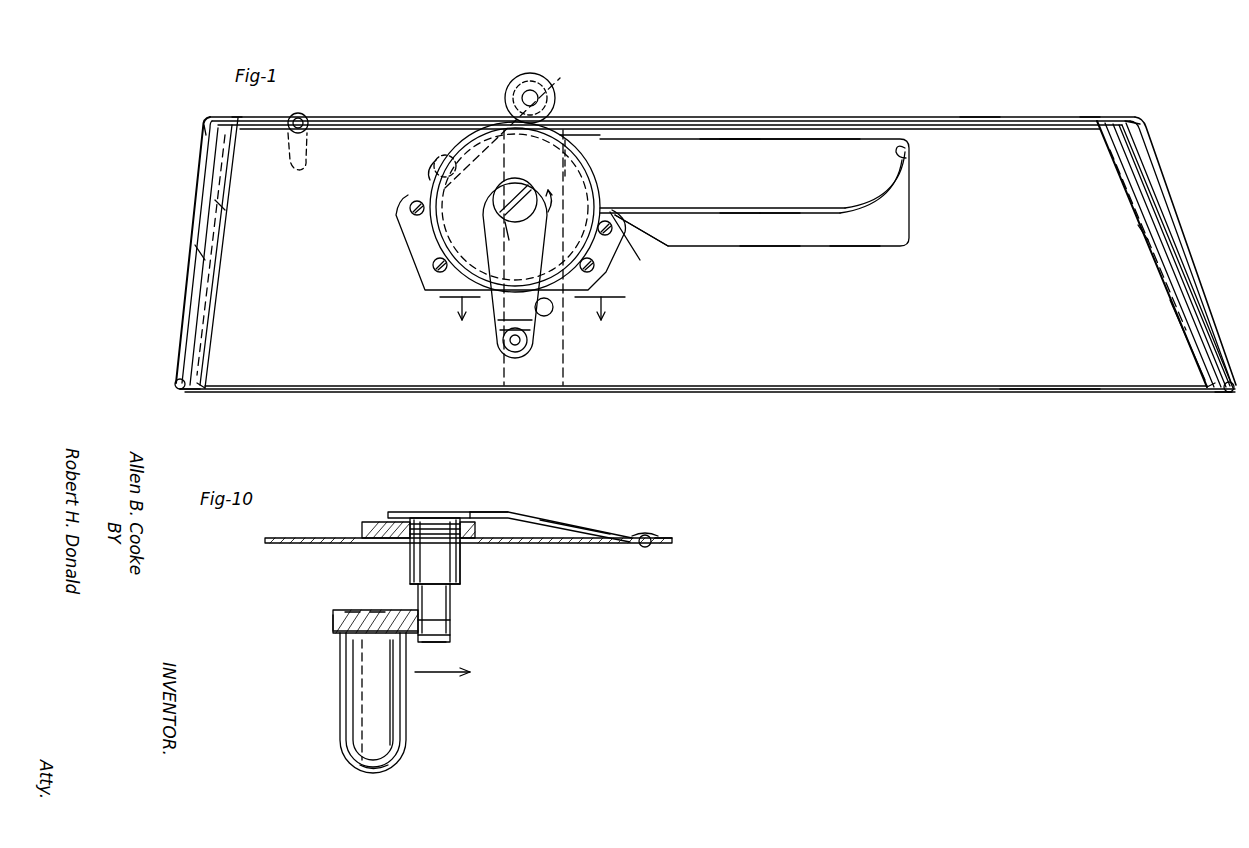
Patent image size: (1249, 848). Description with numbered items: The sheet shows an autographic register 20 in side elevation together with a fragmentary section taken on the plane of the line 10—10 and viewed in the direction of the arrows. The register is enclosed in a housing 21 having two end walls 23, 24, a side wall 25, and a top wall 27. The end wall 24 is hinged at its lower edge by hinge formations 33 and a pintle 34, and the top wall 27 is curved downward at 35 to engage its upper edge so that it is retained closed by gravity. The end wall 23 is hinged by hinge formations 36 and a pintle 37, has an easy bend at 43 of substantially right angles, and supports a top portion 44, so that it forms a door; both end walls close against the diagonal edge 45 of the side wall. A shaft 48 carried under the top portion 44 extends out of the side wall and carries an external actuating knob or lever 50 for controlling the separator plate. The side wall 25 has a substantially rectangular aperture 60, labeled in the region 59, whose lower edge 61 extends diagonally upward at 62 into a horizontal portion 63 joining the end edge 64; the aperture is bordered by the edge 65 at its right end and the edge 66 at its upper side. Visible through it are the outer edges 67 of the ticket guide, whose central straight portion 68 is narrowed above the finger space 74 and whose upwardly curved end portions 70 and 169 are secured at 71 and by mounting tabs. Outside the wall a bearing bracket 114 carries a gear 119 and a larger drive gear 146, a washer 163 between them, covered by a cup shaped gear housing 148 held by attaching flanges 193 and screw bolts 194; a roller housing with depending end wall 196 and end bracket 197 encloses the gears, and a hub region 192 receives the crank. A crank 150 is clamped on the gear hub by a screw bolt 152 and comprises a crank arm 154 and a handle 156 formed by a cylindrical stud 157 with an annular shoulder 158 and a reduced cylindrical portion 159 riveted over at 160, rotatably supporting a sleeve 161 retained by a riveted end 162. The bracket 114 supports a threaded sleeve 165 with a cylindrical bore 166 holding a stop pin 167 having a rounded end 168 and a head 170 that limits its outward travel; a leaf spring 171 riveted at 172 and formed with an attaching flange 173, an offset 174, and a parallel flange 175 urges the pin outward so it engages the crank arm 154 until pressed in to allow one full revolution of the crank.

In FIG. 1, the autographic register 20 is at (878, 114).
In FIG. 1, the housing 21 is at (972, 112).
In FIG. 1, the end wall 23 is at (200, 252).
In FIG. 1, the end wall 24 is at (1180, 258).
In FIG. 1, the side wall 25 is at (1075, 388).
In FIG. 10, the side wall 25 is at (605, 545).
In FIG. 1, the top wall 27 is at (1088, 120).
In FIG. 1, the hinge formations 33 is at (1232, 384).
In FIG. 1, the pintle 34 is at (1215, 395).
In FIG. 1, the downward curve of top wall 35 is at (1134, 120).
In FIG. 1, the hinge formations 36 is at (175, 383).
In FIG. 1, the pintle 37 is at (178, 391).
In FIG. 1, the easy bend 43 is at (204, 133).
In FIG. 1, the top portion 44 is at (238, 120).
In FIG. 1, the diagonal edge 45 is at (225, 208).
In FIG. 1, the shaft 48 is at (305, 137).
In FIG. 1, the actuating knob or lever 50 is at (310, 166).
In FIG. 1, the plate 59 is at (805, 155).
In FIG. 1, the aperture 60 is at (905, 235).
In FIG. 1, the lower edge 61 is at (770, 246).
In FIG. 1, the diagonal portion 62 is at (636, 225).
In FIG. 1, the horizontal portion 63 is at (585, 200).
In FIG. 1, the end edge 64 is at (585, 162).
In FIG. 1, the edge 65 is at (905, 178).
In FIG. 1, the edge 66 is at (738, 140).
In FIG. 1, the outer edges of guide 67 is at (738, 208).
In FIG. 1, the central straight portion 68 is at (775, 205).
In FIG. 1, the upwardly curved end portion 70 is at (900, 192).
In FIG. 1, the securing point 71 is at (912, 152).
In FIG. 1, the finger space 74 is at (857, 248).
In FIG. 1, the section line 10 is at (533, 313).
In FIG. 10, the bearing bracket 114 is at (378, 520).
In FIG. 1, the gear 119 is at (560, 80).
In FIG. 1, the drive gear 146 is at (590, 176).
In FIG. 1, the gear housing 148 is at (485, 138).
In FIG. 1, the crank 150 is at (495, 318).
In FIG. 10, the crank 150 is at (345, 634).
In FIG. 1, the screw bolt 152 is at (513, 222).
In FIG. 10, the crank arm 154 is at (345, 622).
In FIG. 1, the handle 156 is at (521, 352).
In FIG. 10, the handle 156 is at (345, 672).
In FIG. 10, the cylindrical stud 157 is at (398, 690).
In FIG. 10, the annular shoulder 158 is at (398, 612).
In FIG. 1, the reduced cylindrical portion 159 is at (494, 238).
In FIG. 10, the reduced cylindrical portion 159 is at (355, 614).
In FIG. 10, the riveted over portion 160 is at (395, 612).
In FIG. 10, the sleeve 161 is at (406, 722).
In FIG. 1, the riveted end 162 is at (505, 346).
In FIG. 10, the riveted end 162 is at (370, 770).
In FIG. 10, the washer 163 is at (460, 548).
In FIG. 10, the sleeve 165 is at (470, 512).
In FIG. 10, the cylindrical bore 166 is at (452, 596).
In FIG. 1, the stop pin 167 is at (552, 316).
In FIG. 10, the stop pin 167 is at (458, 624).
In FIG. 10, the rounded end 168 is at (450, 638).
In FIG. 10, the upwardly curved end portion 169 is at (464, 570).
In FIG. 10, the head 170 is at (420, 514).
In FIG. 10, the leaf spring 171 is at (536, 508).
In FIG. 10, the rivet point 172 is at (648, 528).
In FIG. 10, the attaching flange 173 is at (660, 528).
In FIG. 10, the offset 174 is at (575, 525).
In FIG. 10, the parallel flange 175 is at (485, 512).
In FIG. 1, the shaft 192 is at (511, 180).
In FIG. 1, the attaching flanges 193 is at (420, 252).
In FIG. 1, the screw bolts 194 is at (410, 208).
In FIG. 1, the depending end wall 196 is at (556, 102).
In FIG. 1, the end bracket 197 is at (447, 162).